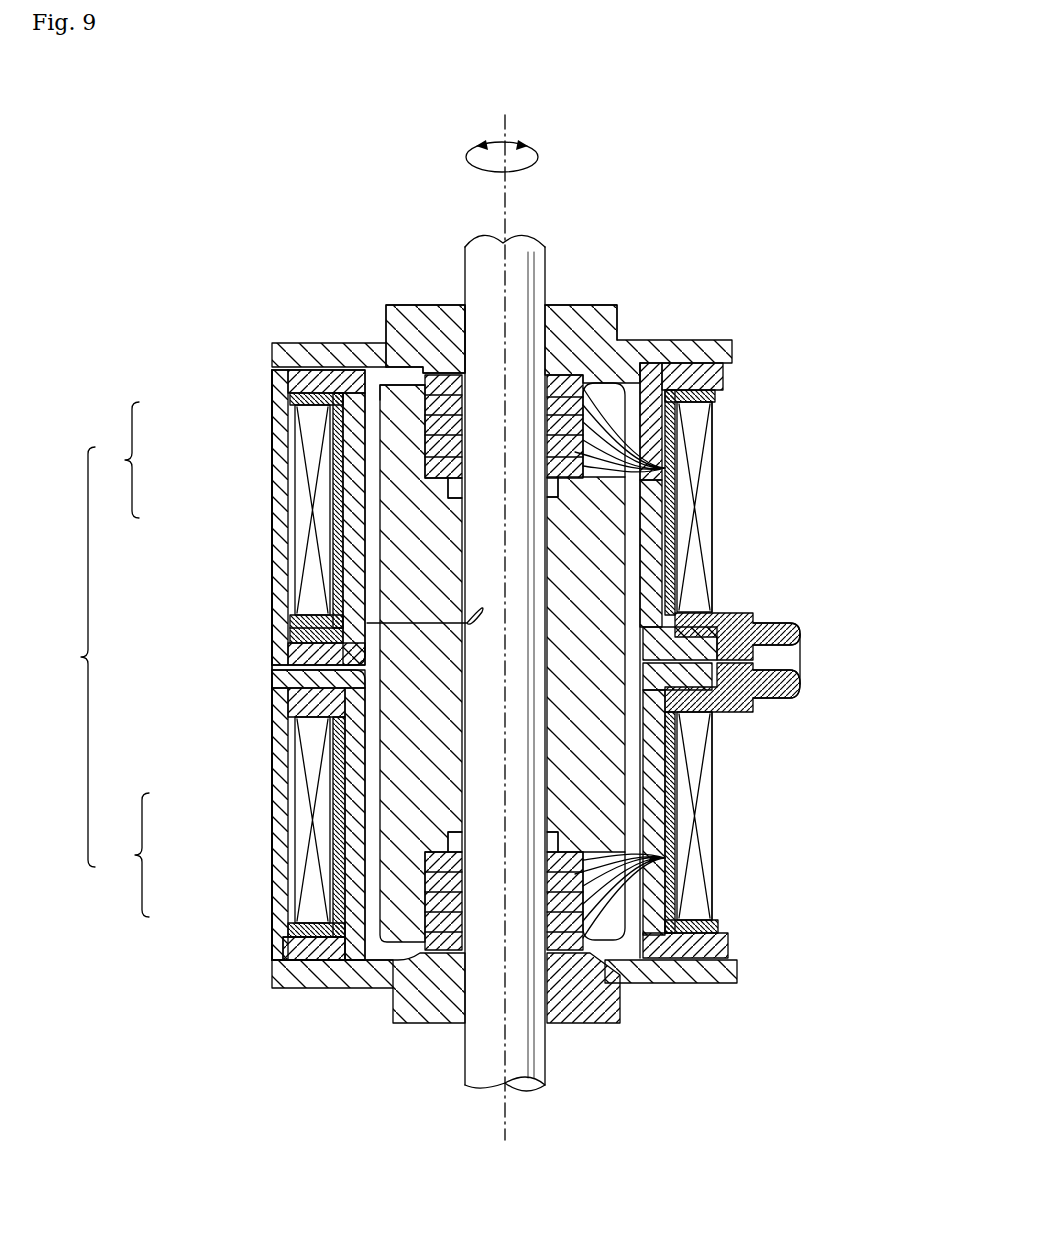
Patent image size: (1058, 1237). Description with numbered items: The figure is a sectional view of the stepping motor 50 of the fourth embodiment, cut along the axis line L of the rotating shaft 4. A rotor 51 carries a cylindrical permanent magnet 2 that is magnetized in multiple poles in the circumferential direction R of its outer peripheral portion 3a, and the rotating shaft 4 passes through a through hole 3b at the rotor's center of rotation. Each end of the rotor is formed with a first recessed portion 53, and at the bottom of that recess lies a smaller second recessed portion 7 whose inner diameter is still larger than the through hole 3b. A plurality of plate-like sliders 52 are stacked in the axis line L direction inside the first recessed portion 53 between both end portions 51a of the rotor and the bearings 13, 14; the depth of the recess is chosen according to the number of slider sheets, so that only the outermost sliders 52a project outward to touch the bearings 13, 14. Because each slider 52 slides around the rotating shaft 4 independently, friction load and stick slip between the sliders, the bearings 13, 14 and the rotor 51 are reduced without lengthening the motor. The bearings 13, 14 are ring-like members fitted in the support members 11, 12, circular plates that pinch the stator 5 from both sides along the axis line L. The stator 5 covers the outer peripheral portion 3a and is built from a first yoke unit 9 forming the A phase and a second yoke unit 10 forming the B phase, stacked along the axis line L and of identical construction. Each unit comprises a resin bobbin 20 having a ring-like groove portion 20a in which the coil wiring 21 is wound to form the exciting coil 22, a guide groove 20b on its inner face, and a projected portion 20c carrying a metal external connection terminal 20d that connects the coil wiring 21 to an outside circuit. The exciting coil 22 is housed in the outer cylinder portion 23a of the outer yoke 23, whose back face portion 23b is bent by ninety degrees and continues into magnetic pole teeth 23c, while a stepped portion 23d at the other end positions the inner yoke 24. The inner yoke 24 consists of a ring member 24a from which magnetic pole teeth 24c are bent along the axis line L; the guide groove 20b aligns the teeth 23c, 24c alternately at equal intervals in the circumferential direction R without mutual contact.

The permanent magnet 2 is at (397, 578).
The outer peripheral portion 3a is at (372, 430).
The through hole 3b is at (290, 632).
The rotating shaft 4 is at (535, 247).
The stator 5 is at (166, 665).
The second recessed portion 7 is at (462, 960).
The first yoke unit 9 is at (234, 517).
The second yoke unit 10 is at (231, 815).
The support member 11 is at (720, 348).
The support member 12 is at (722, 983).
The bearing 13 is at (587, 322).
The bearing 14 is at (395, 988).
The bobbin 20 is at (845, 740).
The groove portion 20a is at (700, 892).
The guide groove 20b is at (678, 827).
The projected portion 20c is at (738, 714).
The external connection terminal 20d is at (802, 688).
The coil wiring 21 is at (713, 912).
The exciting coil 22 is at (180, 856).
The outer yoke 23 is at (180, 808).
The outer cylinder portion 23a is at (278, 722).
The back face portion 23b is at (282, 682).
The magnetic pole teeth 23c is at (672, 770).
The stepped portion 23d is at (280, 952).
The inner yoke 24 is at (180, 905).
The ring member 24a is at (290, 963).
The magnetic pole teeth 24c is at (283, 940).
The stepping motor 50 is at (760, 218).
The rotor 51 is at (640, 365).
The end portions 51a is at (622, 983).
The sliders 52 is at (665, 860).
The outermost sliders 52a is at (563, 952).
The first recessed portion 53 is at (440, 955).
The axis line L is at (505, 128).
The circumferential direction R is at (528, 150).